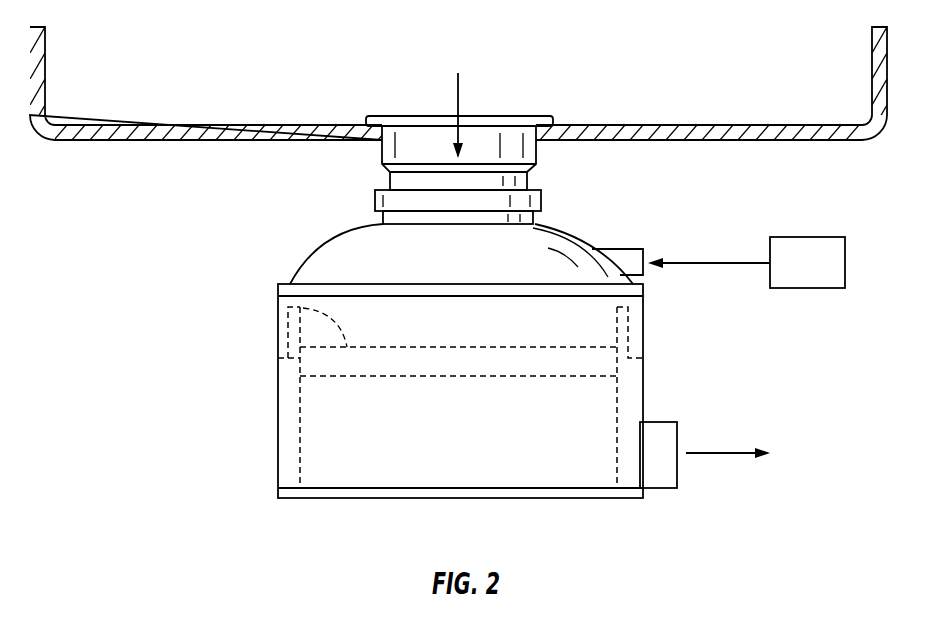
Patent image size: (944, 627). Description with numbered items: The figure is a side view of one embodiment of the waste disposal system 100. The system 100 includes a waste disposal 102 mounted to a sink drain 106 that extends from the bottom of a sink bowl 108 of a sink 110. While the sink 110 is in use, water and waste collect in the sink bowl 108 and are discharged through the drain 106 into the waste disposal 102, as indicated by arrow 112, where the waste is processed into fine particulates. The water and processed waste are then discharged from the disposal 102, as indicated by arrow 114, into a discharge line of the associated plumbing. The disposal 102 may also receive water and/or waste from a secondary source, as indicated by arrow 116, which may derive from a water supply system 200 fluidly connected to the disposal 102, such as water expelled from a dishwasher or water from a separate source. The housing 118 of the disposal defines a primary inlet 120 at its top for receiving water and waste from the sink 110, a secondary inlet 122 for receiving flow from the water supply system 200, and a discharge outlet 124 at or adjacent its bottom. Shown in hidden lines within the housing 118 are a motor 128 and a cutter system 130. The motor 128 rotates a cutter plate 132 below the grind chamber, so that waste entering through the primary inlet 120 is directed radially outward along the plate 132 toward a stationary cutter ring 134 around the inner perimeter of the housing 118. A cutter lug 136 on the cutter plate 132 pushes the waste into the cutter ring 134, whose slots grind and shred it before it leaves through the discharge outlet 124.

The waste disposal system 100 is at (190, 243).
The waste disposal 102 is at (270, 352).
The sink drain 106 is at (523, 148).
The sink bowl 108 is at (197, 123).
The sink 110 is at (55, 77).
The arrow 112 is at (460, 107).
The arrow 114 is at (717, 453).
The arrow 116 is at (695, 262).
The housing 118 is at (650, 380).
The primary inlet 120 is at (388, 218).
The secondary inlet 122 is at (619, 258).
The discharge outlet 124 is at (660, 473).
The motor 128 is at (298, 425).
The cutter system 130 is at (459, 316).
The cutter plate 132 is at (472, 358).
The stationary cutter ring 134 is at (617, 328).
The cutter lug 136 is at (322, 332).
The water supply system 200 is at (825, 275).